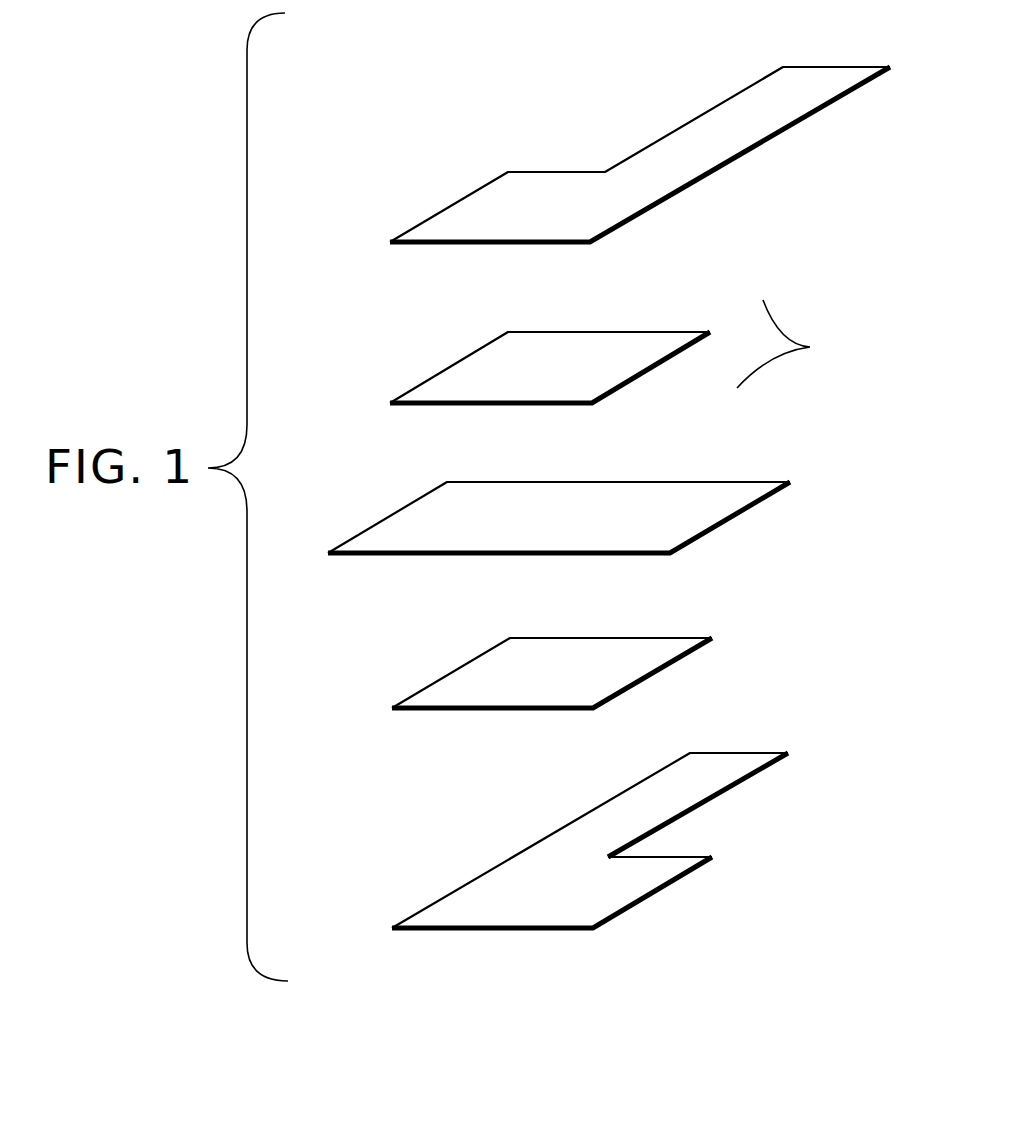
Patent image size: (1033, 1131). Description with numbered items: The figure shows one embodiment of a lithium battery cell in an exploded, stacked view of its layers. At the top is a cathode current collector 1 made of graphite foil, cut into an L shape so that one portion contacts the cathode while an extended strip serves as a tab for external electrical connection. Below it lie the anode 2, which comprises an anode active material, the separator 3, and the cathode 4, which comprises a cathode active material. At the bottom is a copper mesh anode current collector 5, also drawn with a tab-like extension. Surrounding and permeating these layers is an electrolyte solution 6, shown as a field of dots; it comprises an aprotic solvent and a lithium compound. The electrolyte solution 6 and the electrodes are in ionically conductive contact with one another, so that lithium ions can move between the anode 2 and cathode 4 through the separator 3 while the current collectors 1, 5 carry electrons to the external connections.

The cathode current collector 1 is at (428, 218).
The anode 2 is at (422, 685).
The separator 3 is at (380, 518).
The cathode 4 is at (425, 378).
The anode current collector 5 is at (437, 893).
The electrolyte solution 6 is at (782, 344).